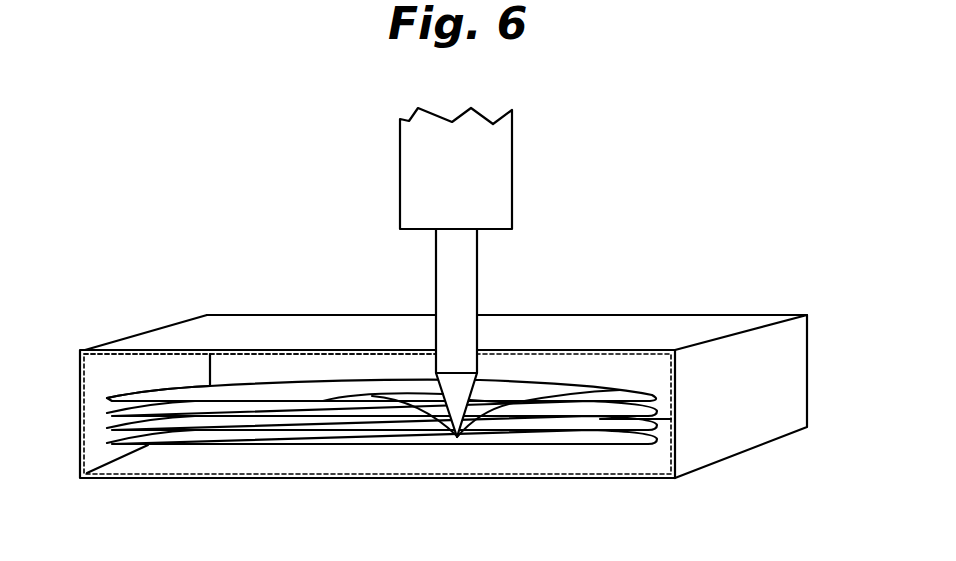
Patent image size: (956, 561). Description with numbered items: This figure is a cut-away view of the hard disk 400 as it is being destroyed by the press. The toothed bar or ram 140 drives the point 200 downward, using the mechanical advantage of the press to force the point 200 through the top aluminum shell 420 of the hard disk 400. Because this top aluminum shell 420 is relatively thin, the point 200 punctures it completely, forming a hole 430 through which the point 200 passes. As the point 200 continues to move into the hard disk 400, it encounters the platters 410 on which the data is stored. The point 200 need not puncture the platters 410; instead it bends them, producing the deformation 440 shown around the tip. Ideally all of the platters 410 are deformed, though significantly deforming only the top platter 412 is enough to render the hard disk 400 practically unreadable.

The toothed bar or ram 140 is at (502, 147).
The point 200 is at (478, 265).
The hard disk 400 is at (137, 344).
The platters 410 is at (570, 410).
The top platter 412 is at (242, 390).
The top aluminum shell 420 is at (235, 325).
The hole 430 is at (428, 350).
The deformation 440 is at (475, 412).